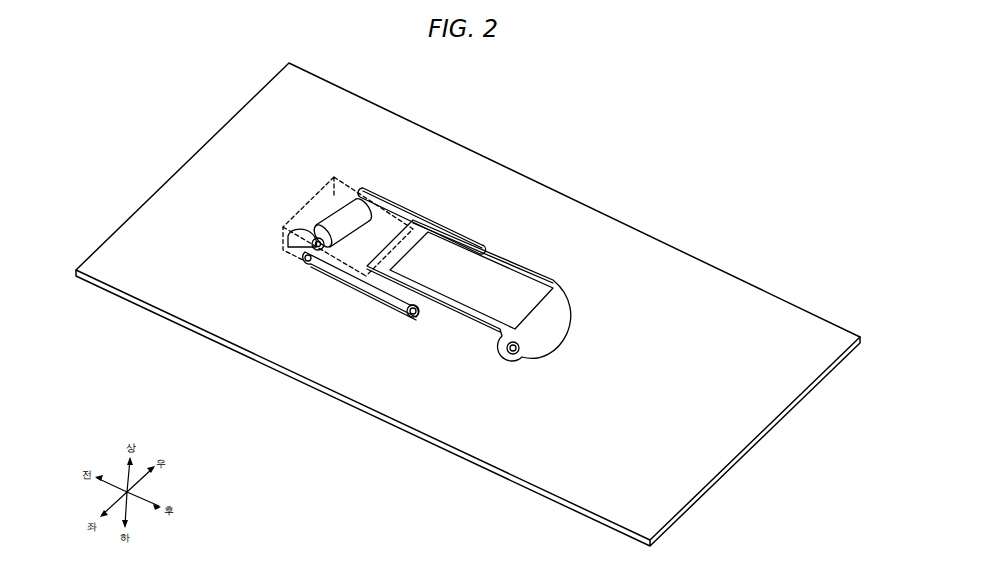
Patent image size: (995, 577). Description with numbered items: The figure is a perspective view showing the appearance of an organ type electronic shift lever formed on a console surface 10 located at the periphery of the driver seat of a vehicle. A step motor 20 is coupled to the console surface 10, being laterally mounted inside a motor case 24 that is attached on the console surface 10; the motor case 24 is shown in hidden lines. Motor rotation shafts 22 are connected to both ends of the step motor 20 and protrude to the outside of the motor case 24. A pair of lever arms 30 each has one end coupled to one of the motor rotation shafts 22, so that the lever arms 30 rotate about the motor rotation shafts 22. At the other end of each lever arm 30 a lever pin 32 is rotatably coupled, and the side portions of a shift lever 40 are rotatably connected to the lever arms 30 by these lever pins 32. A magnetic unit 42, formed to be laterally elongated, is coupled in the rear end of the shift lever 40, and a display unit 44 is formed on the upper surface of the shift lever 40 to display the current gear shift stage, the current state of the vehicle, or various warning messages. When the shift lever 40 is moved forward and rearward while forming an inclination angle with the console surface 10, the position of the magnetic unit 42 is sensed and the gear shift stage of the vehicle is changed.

The console surface 10 is at (727, 307).
The step motor 20 is at (340, 228).
The motor rotation shafts 22 is at (300, 230).
The motor case 24 is at (348, 193).
The lever arms 30 is at (358, 280).
The lever pins 32 is at (413, 313).
The shift lever 40 is at (560, 303).
The magnetic unit 42 is at (515, 348).
The display unit 44 is at (482, 272).